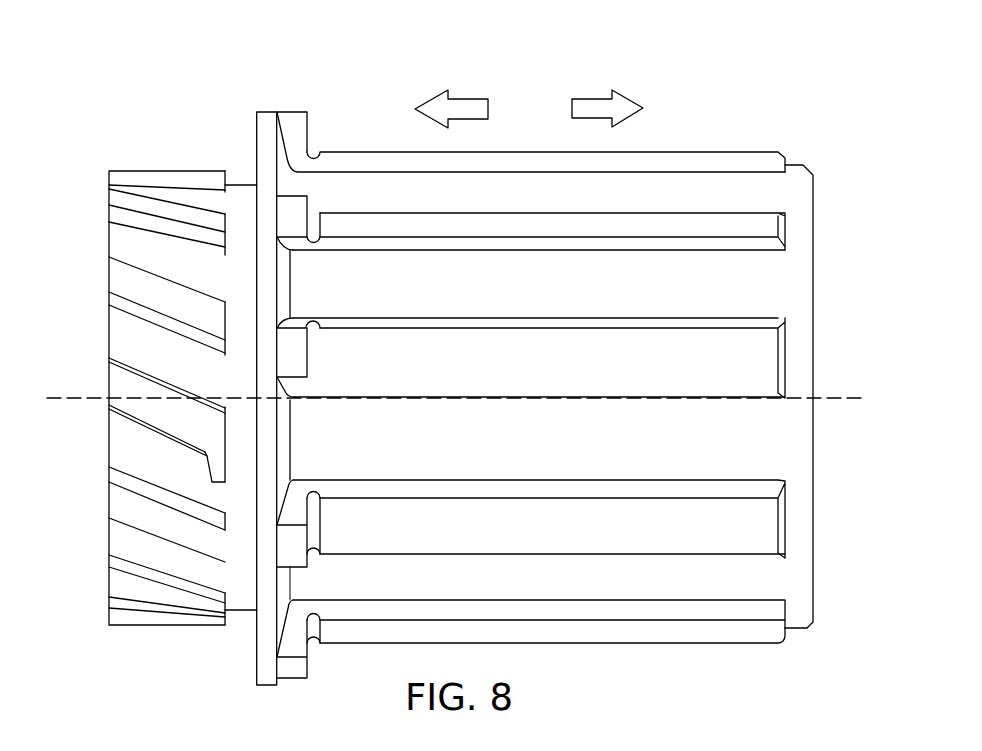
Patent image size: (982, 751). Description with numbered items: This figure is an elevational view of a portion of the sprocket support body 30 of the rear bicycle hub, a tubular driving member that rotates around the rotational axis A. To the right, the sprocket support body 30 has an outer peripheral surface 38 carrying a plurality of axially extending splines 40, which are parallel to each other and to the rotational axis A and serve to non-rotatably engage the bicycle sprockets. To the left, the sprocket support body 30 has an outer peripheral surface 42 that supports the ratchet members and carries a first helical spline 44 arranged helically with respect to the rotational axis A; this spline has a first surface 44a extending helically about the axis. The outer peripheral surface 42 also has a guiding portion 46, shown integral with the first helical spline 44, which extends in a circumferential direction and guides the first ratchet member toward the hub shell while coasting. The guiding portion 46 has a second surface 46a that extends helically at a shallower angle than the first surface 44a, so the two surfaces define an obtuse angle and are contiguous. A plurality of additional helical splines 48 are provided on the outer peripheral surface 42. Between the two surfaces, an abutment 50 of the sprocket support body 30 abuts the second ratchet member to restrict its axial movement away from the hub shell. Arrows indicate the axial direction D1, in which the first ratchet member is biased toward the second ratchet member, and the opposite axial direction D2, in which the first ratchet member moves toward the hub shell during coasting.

The sprocket support body 30 is at (530, 381).
The outer peripheral surface 38 is at (750, 442).
The axially extending splines 40 is at (698, 630).
The outer peripheral surface 42 is at (137, 543).
The first helical spline 44 is at (137, 248).
The first surface 44a is at (150, 428).
The guiding portion 46 is at (217, 468).
The second surface 46a is at (213, 467).
The additional helical splines 48 is at (144, 655).
The abutment 50 is at (262, 110).
The rotational axis A is at (70, 397).
The axial direction D1 is at (587, 99).
The axial direction D2 is at (468, 99).